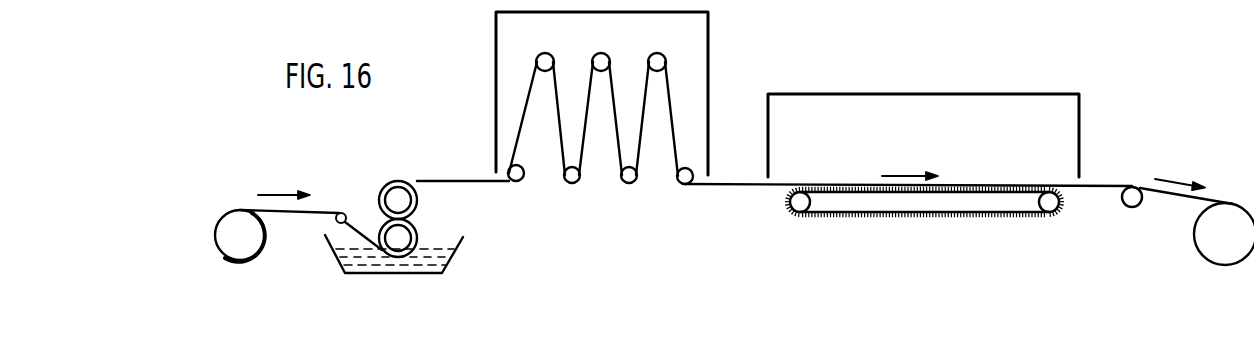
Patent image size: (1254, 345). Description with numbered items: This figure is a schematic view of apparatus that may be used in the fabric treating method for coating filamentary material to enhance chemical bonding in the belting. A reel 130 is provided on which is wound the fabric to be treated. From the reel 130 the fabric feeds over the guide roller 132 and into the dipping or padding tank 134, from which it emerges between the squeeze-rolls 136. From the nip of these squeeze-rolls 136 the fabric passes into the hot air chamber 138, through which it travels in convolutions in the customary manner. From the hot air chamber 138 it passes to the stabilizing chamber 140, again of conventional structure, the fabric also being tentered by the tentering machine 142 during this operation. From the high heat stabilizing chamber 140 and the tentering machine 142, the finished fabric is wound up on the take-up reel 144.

The reel 130 is at (243, 251).
The guide roller 132 is at (335, 220).
The dipping or padding tank 134 is at (452, 255).
The squeeze-rolls 136 is at (425, 216).
The hot air chamber 138 is at (720, 38).
The stabilizing chamber 140 is at (1090, 110).
The tentering machine 142 is at (986, 220).
The take-up reel 144 is at (1202, 234).